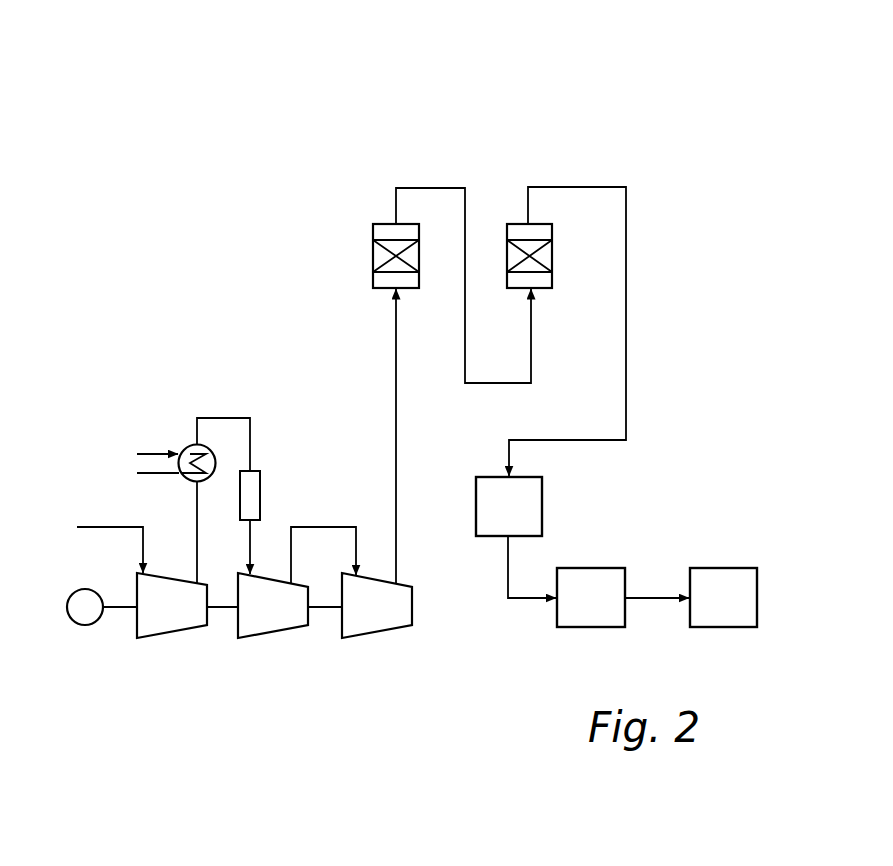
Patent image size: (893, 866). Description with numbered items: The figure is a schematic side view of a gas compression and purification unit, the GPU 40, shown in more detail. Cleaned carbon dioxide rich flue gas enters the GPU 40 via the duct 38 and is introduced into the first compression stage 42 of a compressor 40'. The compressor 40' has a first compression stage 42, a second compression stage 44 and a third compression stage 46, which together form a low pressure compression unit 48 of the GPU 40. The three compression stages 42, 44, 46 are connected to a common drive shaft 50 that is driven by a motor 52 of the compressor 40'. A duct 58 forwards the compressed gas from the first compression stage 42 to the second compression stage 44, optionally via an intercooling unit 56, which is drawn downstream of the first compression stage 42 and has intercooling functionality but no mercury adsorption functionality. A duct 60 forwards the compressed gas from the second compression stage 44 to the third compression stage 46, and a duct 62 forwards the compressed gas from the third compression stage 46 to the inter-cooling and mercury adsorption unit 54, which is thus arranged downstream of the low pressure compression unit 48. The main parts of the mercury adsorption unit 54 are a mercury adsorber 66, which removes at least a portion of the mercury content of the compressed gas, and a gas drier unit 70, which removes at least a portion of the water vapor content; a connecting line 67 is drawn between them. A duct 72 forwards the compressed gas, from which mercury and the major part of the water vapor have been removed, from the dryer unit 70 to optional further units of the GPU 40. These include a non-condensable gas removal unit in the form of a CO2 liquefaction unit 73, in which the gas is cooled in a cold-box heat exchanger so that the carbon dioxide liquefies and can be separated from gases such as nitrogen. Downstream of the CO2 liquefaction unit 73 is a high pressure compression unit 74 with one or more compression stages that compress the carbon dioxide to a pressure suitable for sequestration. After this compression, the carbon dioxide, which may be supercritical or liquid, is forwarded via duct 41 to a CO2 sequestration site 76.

The duct 38 is at (100, 527).
The GPU 40 is at (656, 69).
The compressor 40' is at (54, 538).
The duct 41 is at (658, 595).
The first compression stage 42 is at (152, 638).
The second compression stage 44 is at (262, 634).
The third compression stage 46 is at (373, 634).
The low pressure compression unit 48 is at (308, 736).
The common drive shaft 50 is at (225, 612).
The motor 52 is at (85, 626).
The mercury adsorption unit 54 is at (356, 172).
The intercooling unit 56 is at (203, 396).
The duct 58 is at (196, 512).
The duct 60 is at (318, 527).
The duct 62 is at (397, 438).
The mercury adsorber 66 is at (373, 233).
The interconnecting line 67 is at (435, 188).
The gas drier unit 70 is at (518, 224).
The duct 72 is at (626, 390).
The CO2 liquefaction unit 73 is at (487, 538).
The high pressure compression unit 74 is at (580, 628).
The CO2 sequestration site 76 is at (722, 580).